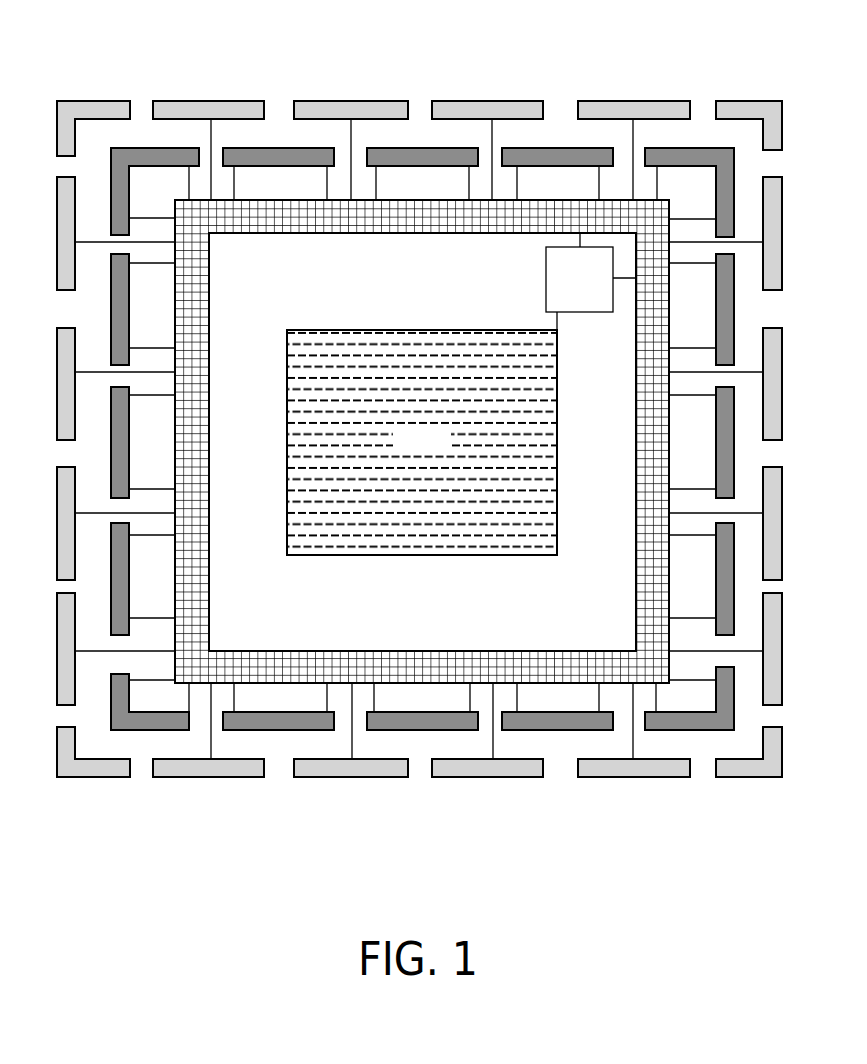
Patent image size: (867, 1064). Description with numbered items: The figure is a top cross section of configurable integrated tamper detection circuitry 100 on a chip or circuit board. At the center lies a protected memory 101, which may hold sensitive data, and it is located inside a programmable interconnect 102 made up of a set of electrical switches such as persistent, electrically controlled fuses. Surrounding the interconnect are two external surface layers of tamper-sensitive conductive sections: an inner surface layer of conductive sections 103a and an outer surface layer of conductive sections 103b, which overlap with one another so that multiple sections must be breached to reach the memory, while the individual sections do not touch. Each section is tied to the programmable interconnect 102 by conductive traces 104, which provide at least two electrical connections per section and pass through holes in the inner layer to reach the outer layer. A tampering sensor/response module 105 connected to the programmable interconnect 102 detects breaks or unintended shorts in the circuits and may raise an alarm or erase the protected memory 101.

The semiconductor package 100 is at (170, 47).
The protected memory 101 is at (438, 446).
The programmable interconnect 102 is at (385, 218).
The conductive sections 103a is at (557, 157).
The conductive sections 103b is at (494, 113).
The conductive traces 104 is at (327, 178).
The tampering sensor/response module 105 is at (596, 290).